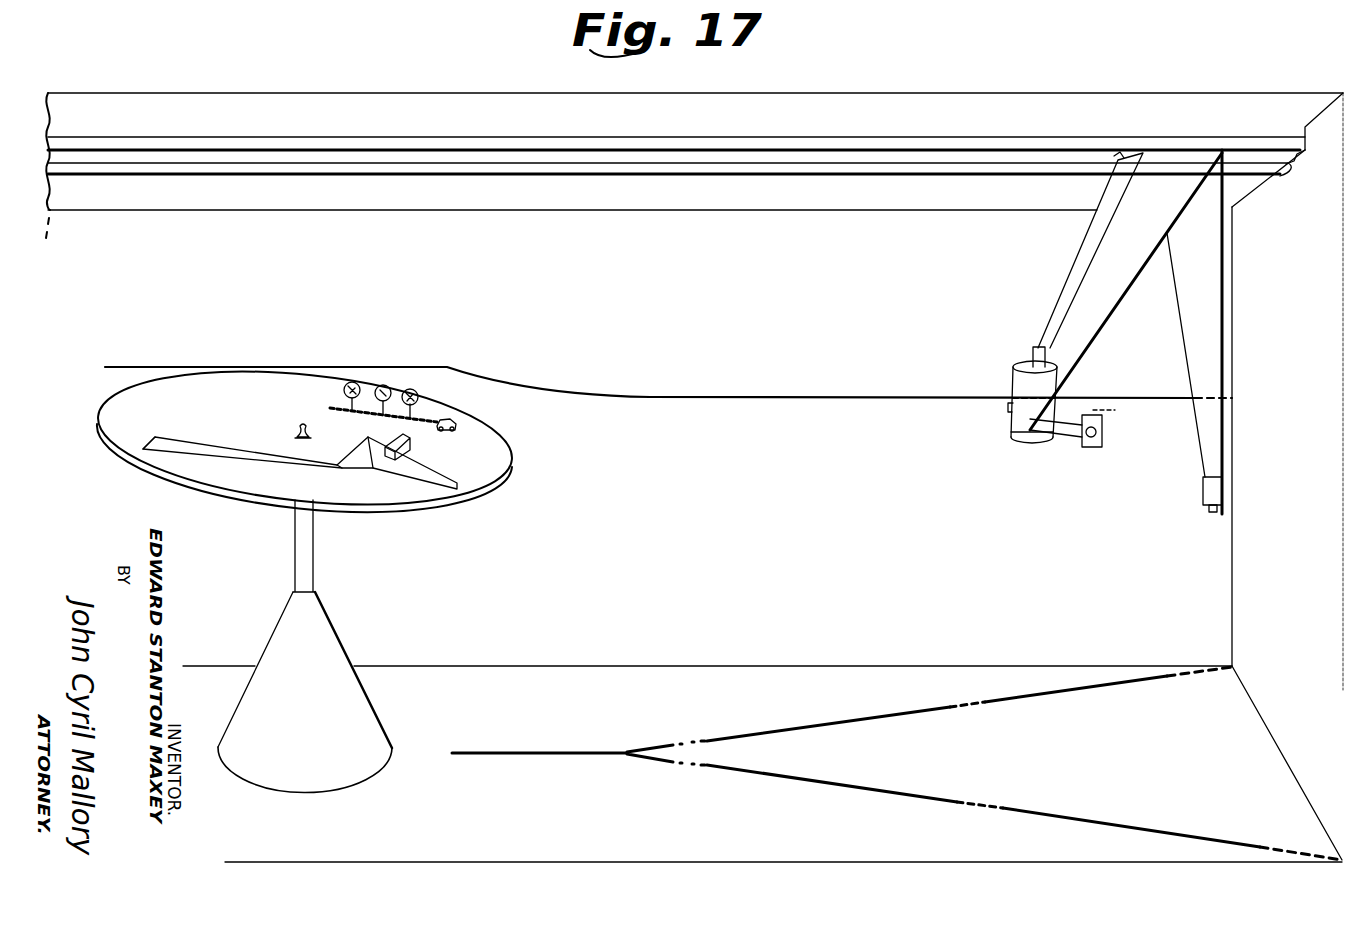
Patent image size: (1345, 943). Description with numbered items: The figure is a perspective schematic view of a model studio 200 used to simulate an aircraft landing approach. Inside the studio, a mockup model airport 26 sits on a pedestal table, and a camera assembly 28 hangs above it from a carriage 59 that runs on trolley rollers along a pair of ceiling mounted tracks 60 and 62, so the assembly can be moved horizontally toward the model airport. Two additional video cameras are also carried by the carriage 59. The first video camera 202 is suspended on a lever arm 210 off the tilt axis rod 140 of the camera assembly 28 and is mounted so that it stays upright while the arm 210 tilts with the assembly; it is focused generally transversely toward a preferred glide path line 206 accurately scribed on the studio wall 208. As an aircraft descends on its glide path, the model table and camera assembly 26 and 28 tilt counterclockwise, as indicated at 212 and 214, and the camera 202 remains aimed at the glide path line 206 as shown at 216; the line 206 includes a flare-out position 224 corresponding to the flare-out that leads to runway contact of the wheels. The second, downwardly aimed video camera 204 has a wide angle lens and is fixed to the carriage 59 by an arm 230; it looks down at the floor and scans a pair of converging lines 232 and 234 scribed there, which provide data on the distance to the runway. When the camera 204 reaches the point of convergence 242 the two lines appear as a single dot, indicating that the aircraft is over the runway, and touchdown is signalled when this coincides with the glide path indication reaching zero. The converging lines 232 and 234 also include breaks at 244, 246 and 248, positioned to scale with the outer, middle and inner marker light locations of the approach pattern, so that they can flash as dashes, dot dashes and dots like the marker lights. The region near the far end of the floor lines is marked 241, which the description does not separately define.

The model studio 200 is at (910, 88).
The ceiling mounted track 60 is at (800, 128).
The ceiling mounted track 62 is at (812, 177).
The studio wall 208 is at (830, 348).
The glide path line 206 is at (868, 398).
The flare-out position 224 is at (506, 382).
The model airport 26 is at (497, 428).
The counterclockwise tilt of model table 212 is at (492, 512).
The carriage 59 is at (1146, 228).
The arm 230 is at (1208, 289).
The camera assembly 28 is at (1003, 388).
The counterclockwise tilt of camera assembly 214 is at (1003, 405).
The tilt axis rod 140 is at (1013, 435).
The lever arm 210 is at (1066, 441).
The video camera 202 is at (1103, 434).
The camera focus on glide path line 216 is at (1121, 412).
The video camera 204 is at (1203, 495).
The point of convergence 242 is at (627, 755).
The break 248 is at (702, 761).
The converging line 234 is at (1058, 698).
The break 246 is at (962, 800).
The converging line 232 is at (1068, 820).
The break 244 is at (1167, 680).
The strip end 241 is at (1296, 837).